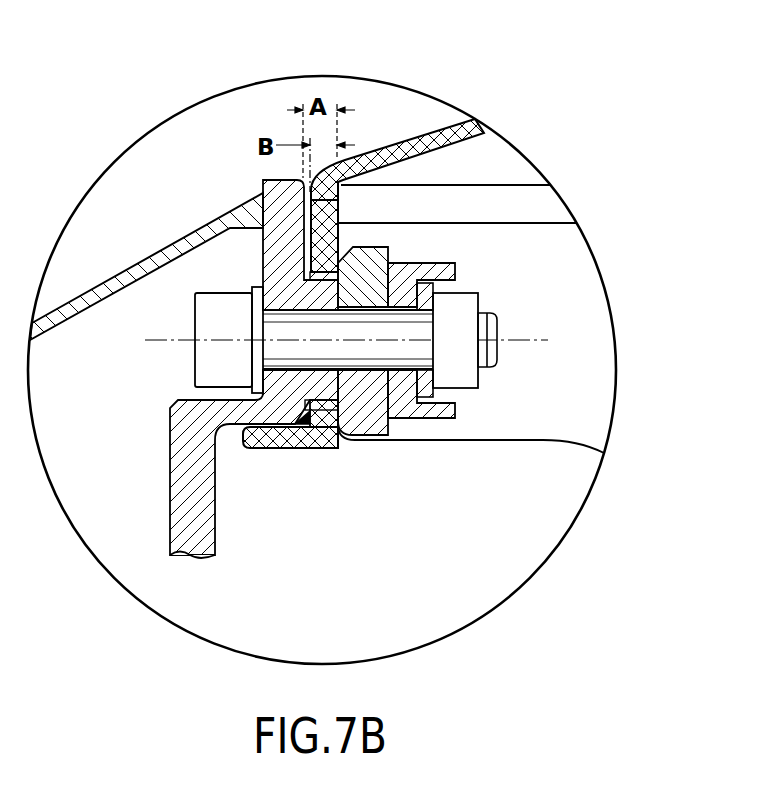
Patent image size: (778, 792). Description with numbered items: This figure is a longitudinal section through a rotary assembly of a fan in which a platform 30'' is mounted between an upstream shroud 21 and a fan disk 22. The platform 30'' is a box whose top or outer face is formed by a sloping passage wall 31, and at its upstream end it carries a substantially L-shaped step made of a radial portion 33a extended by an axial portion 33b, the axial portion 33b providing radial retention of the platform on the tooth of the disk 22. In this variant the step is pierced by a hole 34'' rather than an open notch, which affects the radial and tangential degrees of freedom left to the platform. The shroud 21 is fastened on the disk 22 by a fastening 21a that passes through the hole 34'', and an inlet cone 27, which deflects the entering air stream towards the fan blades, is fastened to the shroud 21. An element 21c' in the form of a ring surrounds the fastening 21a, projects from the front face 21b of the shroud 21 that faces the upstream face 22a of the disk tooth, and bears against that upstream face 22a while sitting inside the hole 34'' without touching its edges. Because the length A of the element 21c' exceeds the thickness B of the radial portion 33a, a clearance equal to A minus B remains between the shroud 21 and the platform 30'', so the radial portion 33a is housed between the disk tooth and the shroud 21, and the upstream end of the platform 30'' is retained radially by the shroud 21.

The upstream shroud 21 is at (183, 497).
The fastener 21a is at (220, 370).
The front face of the shroud 21b is at (318, 218).
The element 21c' is at (382, 441).
The fan disk 22 is at (557, 422).
The upstream face of the tooth of the disk 22a is at (318, 284).
The inlet cone 27 is at (177, 248).
The platform 30'' is at (428, 72).
The passage wall 31 is at (400, 147).
The radial portion of the step 33a is at (318, 220).
The axial portion of the step 33b is at (263, 450).
The hole 34'' is at (332, 461).